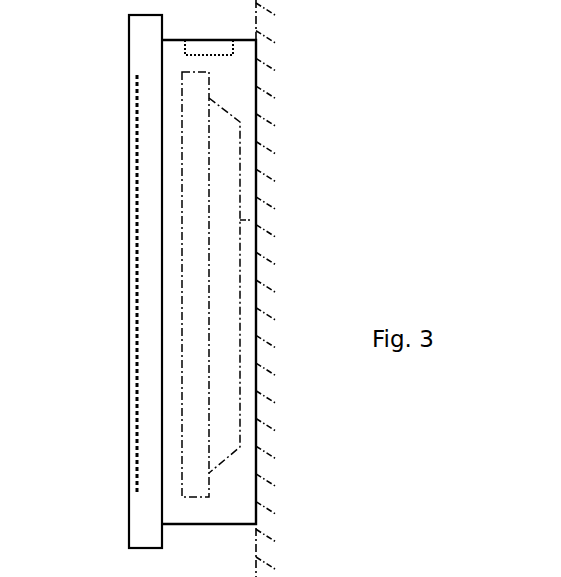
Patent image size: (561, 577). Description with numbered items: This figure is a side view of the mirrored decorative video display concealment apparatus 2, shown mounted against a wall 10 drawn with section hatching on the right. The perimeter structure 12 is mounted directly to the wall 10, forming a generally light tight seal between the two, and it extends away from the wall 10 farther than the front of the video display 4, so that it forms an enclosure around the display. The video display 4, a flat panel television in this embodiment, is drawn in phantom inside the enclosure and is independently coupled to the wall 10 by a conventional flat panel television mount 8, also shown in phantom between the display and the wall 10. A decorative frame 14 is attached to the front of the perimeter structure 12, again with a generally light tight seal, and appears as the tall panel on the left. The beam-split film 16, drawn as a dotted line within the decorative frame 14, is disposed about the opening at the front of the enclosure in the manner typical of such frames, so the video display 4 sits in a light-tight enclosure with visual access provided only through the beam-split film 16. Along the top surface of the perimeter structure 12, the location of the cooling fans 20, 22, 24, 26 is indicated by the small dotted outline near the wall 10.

The mirrored decorative video display concealment apparatus 2 is at (72, 517).
The video display 4 is at (208, 438).
The flat panel television mount 8 is at (250, 349).
The wall 10 is at (256, 546).
The perimeter structure 12 is at (202, 525).
The decorative frame 14 is at (129, 398).
The beam-split film 16 is at (137, 330).
The cooling fan 20 is at (228, 57).
The cooling fan 22 is at (209, 47).
The cooling fan 24 is at (209, 47).
The cooling fan 26 is at (209, 47).